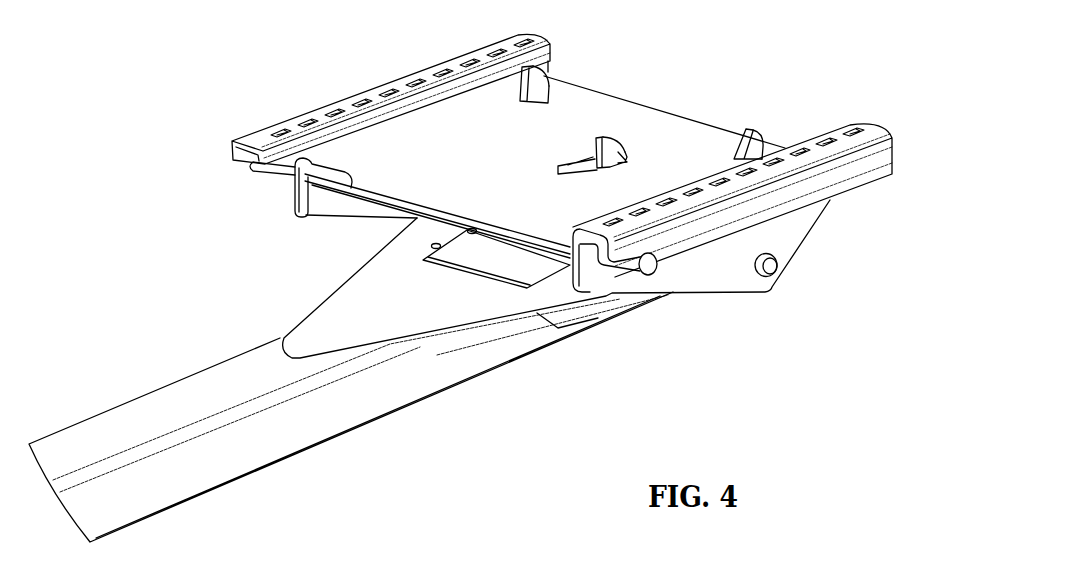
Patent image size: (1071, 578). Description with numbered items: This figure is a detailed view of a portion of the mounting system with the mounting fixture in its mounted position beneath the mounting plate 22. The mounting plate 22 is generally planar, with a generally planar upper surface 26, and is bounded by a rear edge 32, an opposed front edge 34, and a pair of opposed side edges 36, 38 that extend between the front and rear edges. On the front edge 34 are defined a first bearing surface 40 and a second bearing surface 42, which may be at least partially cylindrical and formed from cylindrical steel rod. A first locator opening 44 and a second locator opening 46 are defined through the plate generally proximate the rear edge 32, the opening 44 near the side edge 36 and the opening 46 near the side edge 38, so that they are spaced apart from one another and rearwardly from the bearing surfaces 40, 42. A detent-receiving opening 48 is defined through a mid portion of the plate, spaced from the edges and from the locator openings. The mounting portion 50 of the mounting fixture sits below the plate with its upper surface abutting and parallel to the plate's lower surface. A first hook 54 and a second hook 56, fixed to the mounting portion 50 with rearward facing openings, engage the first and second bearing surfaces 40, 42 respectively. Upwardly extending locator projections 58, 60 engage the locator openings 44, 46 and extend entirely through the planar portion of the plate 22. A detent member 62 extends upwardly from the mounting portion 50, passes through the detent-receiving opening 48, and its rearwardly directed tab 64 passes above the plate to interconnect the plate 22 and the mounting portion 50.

The mounting plate 22 is at (673, 47).
The upper surface 26 is at (492, 155).
The rear edge 32 is at (672, 114).
The front edge 34 is at (370, 197).
The side edge 36 is at (367, 91).
The side edge 38 is at (783, 203).
The first bearing surface 40 is at (273, 171).
The second bearing surface 42 is at (633, 264).
The first locator opening 44 is at (544, 103).
The second locator opening 46 is at (747, 129).
The detent-receiving opening 48 is at (587, 174).
The mounting portion 50 is at (783, 269).
The first hook 54 is at (323, 163).
The second hook 56 is at (570, 237).
The locator projection 58 is at (547, 78).
The locator projection 60 is at (760, 138).
The detent member 62 is at (599, 137).
The rearwardly directed tab 64 is at (624, 149).